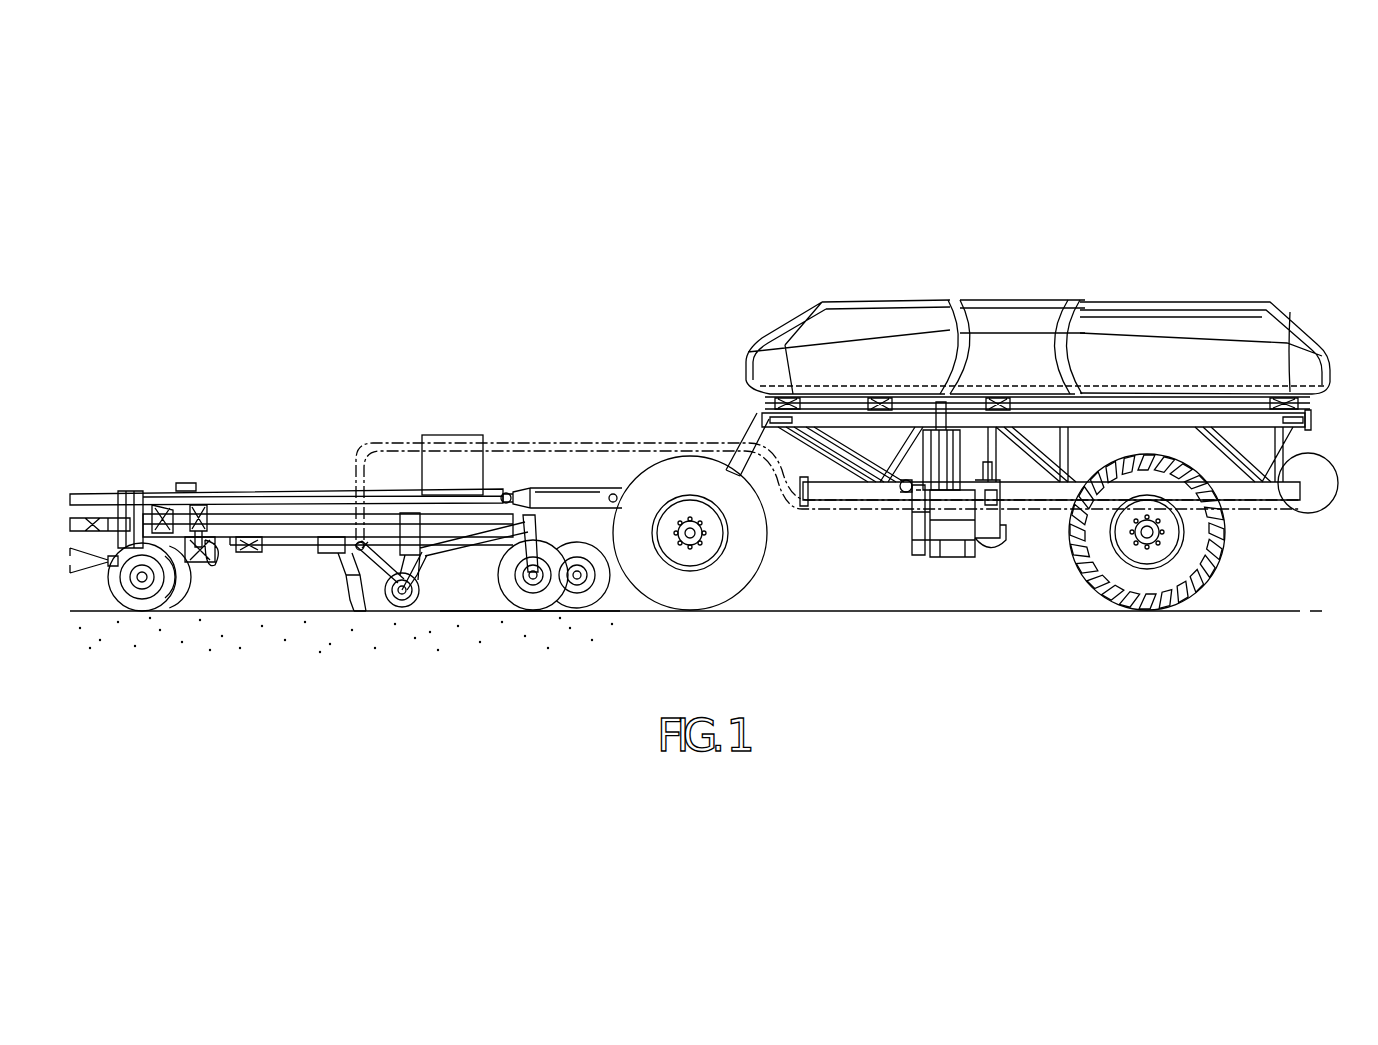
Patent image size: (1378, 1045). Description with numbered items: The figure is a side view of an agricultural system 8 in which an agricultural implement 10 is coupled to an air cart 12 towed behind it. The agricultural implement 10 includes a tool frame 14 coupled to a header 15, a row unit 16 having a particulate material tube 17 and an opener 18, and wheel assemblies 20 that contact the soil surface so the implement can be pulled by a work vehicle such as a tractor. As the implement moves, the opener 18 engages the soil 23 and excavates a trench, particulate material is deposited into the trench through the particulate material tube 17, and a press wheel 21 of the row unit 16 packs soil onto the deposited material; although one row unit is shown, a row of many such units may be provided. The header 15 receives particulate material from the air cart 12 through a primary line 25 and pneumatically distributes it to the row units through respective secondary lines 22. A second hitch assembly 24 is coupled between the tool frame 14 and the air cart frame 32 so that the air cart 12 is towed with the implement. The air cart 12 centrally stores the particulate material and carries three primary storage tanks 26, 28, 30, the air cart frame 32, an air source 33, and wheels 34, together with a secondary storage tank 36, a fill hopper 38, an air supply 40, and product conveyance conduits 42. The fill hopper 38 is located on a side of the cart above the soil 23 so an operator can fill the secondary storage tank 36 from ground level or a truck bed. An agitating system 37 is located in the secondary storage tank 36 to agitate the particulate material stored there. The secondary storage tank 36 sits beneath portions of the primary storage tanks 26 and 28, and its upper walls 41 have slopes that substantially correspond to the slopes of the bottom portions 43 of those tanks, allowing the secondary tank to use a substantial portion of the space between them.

The agricultural system 8 is at (516, 276).
The agricultural implement 10 is at (294, 445).
The air cart 12 is at (1043, 248).
The tool frame 14 is at (339, 492).
The header 15 is at (468, 441).
The row unit 16 is at (328, 601).
The particulate material tube 17 is at (362, 578).
The opener 18 is at (350, 613).
The wheel assemblies 20 is at (538, 547).
The press wheel 21 is at (418, 590).
The secondary lines 22 is at (409, 440).
The soil 23 is at (450, 603).
The second hitch assembly 24 is at (513, 490).
The primary line 25 is at (543, 444).
The primary storage tank 26 is at (882, 300).
The primary storage tank 28 is at (1010, 302).
The primary storage tank 30 is at (1185, 302).
The air cart frame 32 is at (1297, 446).
The air source 33 is at (1318, 490).
The wheels 34 is at (747, 558).
The secondary storage tank 36 is at (880, 452).
The agitating system 37 is at (925, 508).
The fill hopper 38 is at (953, 500).
The air supply 40 is at (995, 522).
The upper walls 41 is at (940, 402).
The product conveyance conduits 42 is at (905, 481).
The bottom portions 43 is at (878, 420).